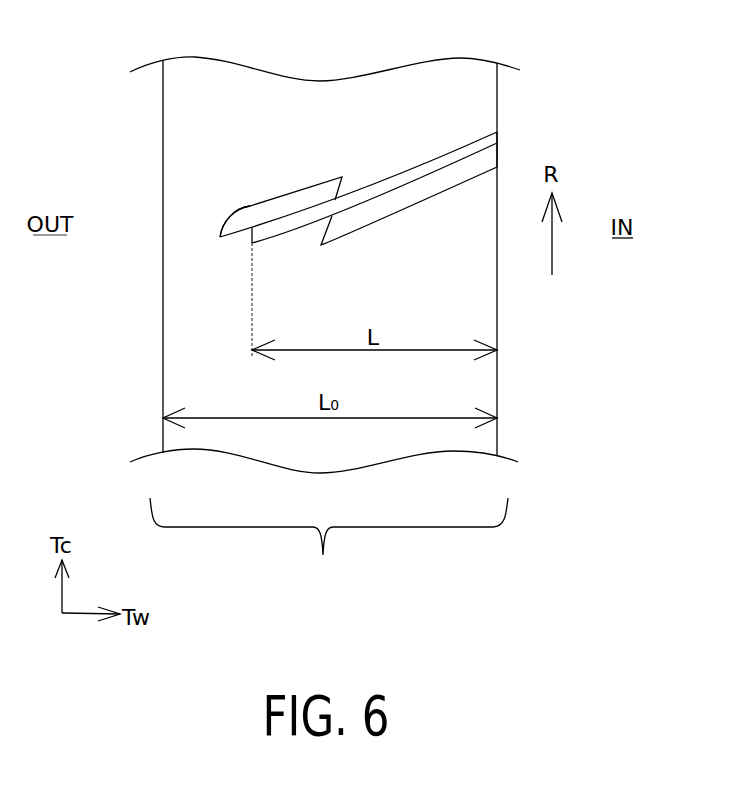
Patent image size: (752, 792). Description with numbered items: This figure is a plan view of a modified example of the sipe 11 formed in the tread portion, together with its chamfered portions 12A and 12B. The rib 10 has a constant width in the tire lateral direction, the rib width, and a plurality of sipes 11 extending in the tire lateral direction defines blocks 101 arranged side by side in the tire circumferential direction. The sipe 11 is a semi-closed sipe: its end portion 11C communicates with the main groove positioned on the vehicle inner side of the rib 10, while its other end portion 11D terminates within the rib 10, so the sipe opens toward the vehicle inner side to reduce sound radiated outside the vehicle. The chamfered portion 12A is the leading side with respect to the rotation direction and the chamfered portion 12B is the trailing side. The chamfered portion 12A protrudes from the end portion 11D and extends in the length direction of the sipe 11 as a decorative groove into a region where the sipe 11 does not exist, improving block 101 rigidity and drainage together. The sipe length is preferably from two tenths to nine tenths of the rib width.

The rib 10 is at (329, 543).
The sipe 11 is at (373, 190).
The end portion 11C is at (492, 137).
The end portion 11D is at (257, 233).
The chamfered portion 12A is at (300, 207).
The chamfered portion 12B is at (437, 188).
The block 101 is at (203, 110).